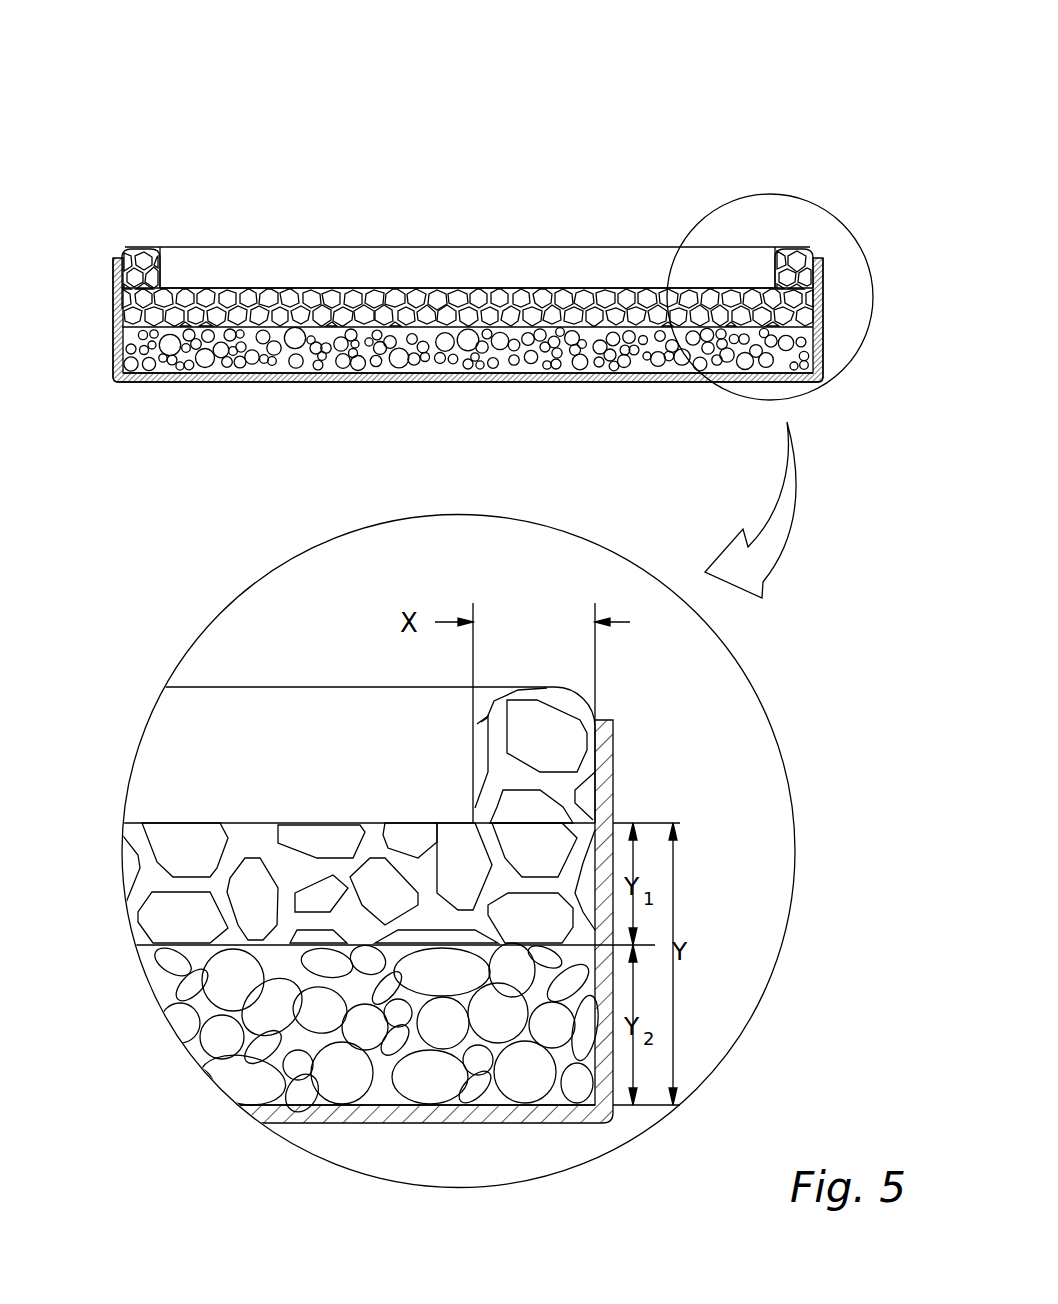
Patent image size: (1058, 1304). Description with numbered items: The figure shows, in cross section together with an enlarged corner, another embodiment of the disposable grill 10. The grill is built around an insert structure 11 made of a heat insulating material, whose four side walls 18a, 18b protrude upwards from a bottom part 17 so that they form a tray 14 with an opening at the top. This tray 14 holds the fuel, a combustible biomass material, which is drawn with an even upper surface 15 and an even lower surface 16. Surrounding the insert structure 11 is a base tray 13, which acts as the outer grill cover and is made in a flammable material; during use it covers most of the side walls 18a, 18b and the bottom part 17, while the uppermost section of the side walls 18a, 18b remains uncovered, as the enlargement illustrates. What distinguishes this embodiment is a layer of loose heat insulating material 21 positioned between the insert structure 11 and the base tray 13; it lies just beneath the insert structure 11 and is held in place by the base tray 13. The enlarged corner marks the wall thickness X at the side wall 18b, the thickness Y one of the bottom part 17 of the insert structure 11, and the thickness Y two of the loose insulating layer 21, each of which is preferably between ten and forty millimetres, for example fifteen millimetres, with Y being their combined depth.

The disposable grill 10 is at (138, 118).
The insert structure 11 is at (803, 250).
The base tray 13 is at (637, 382).
The tray 14 is at (519, 262).
The upper surface 15 is at (291, 289).
The lower surface 16 is at (292, 382).
The bottom part 17 is at (455, 382).
The side wall 18a is at (133, 304).
The side wall 18b is at (813, 300).
The layer of loose heat insulating material 21 is at (143, 382).